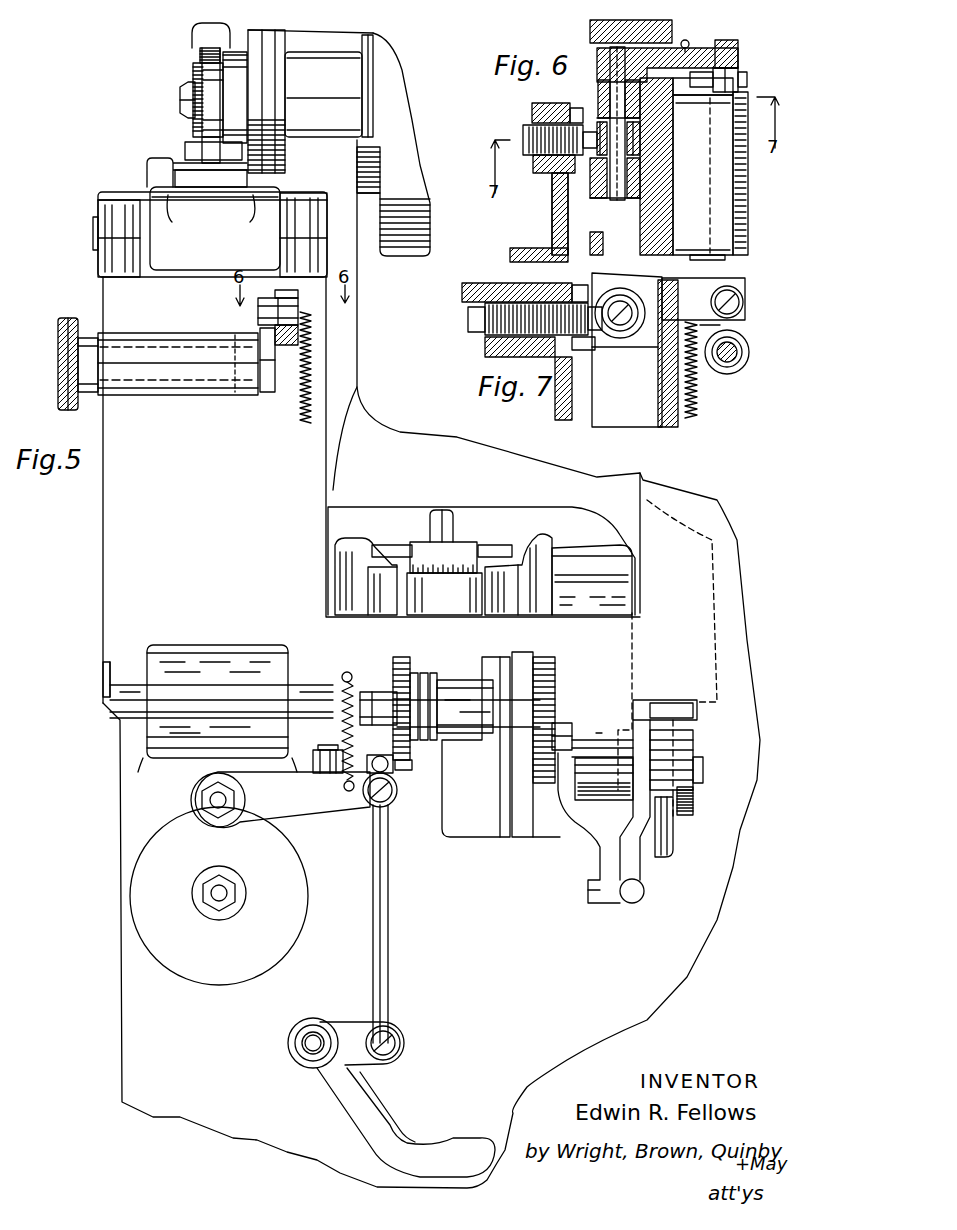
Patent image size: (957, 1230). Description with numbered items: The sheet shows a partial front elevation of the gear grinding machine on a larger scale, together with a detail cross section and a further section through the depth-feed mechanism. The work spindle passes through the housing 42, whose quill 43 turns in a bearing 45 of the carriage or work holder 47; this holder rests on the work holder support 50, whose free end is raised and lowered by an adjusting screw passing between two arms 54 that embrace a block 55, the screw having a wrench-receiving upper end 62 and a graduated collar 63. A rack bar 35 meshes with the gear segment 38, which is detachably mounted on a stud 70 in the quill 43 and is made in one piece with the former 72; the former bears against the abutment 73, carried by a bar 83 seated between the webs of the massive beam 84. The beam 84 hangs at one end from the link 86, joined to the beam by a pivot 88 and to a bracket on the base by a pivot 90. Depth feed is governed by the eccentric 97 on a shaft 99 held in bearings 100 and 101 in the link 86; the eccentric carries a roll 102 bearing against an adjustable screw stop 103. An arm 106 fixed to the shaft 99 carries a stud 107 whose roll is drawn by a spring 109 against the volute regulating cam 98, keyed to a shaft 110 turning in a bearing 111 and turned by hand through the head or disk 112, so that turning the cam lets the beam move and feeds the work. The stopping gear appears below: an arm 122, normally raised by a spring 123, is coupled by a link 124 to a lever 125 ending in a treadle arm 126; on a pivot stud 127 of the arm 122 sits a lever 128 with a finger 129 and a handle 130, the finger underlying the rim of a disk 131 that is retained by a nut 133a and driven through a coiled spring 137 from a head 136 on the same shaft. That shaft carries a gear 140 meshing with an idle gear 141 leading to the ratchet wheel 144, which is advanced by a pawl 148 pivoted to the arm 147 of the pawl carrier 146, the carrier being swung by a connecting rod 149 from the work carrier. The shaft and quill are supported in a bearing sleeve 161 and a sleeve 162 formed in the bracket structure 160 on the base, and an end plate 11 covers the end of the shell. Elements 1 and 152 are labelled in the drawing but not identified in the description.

In FIG. 5, the machine frame 1 is at (122, 982).
In FIG. 5, the end plate 11 is at (230, 980).
In FIG. 5, the rack bar 35 is at (192, 36).
In FIG. 5, the gear segment 38 is at (200, 55).
In FIG. 5, the housing 42 is at (400, 258).
In FIG. 5, the sleeve or quill 43 is at (240, 35).
In FIG. 5, the bearing 45 is at (330, 40).
In FIG. 5, the carriage or work holder 47 is at (347, 360).
In FIG. 5, the work holder support 50 is at (387, 550).
In FIG. 5, the arms 54 is at (560, 575).
In FIG. 5, the block 55 is at (505, 575).
In FIG. 5, the upper end of screw 62 is at (448, 525).
In FIG. 5, the collar 63 is at (460, 560).
In FIG. 5, the stud 70 is at (180, 100).
In FIG. 5, the former 72 is at (200, 152).
In FIG. 5, the abutment 73 is at (172, 200).
In FIG. 5, the bar 83 is at (223, 200).
In FIG. 5, the channel bar or beam 84 is at (160, 186).
In FIG. 5, the link 86 is at (118, 530).
In FIG. 6, the link 86 is at (665, 185).
In FIG. 7, the link 86 is at (660, 420).
In FIG. 5, the pivot 88 is at (95, 228).
In FIG. 5, the pivot 90 is at (100, 690).
In FIG. 7, the cam or eccentric 97 is at (620, 333).
In FIG. 5, the regulating cam 98 is at (272, 370).
In FIG. 7, the regulating cam 98 is at (728, 328).
In FIG. 6, the shaft 99 is at (614, 92).
In FIG. 6, the bearing 100 is at (598, 100).
In FIG. 6, the bearing 101 is at (595, 202).
In FIG. 6, the roll 102 is at (630, 135).
In FIG. 7, the roll 102 is at (615, 350).
In FIG. 6, the screw stop 103 is at (560, 170).
In FIG. 7, the screw stop 103 is at (585, 355).
In FIG. 5, the arm 106 is at (298, 292).
In FIG. 6, the arm 106 is at (695, 48).
In FIG. 7, the arm 106 is at (690, 296).
In FIG. 5, the stud 107 is at (258, 312).
In FIG. 6, the stud 107 is at (735, 70).
In FIG. 7, the stud 107 is at (740, 298).
In FIG. 5, the spring 109 is at (302, 400).
In FIG. 6, the spring 109 is at (684, 40).
In FIG. 7, the spring 109 is at (698, 400).
In FIG. 5, the shaft 110 is at (236, 398).
In FIG. 6, the shaft 110 is at (730, 210).
In FIG. 7, the shaft 110 is at (745, 360).
In FIG. 5, the bearing 111 is at (185, 370).
In FIG. 6, the bearing 111 is at (745, 178).
In FIG. 5, the head or disk 112 is at (62, 328).
In FIG. 5, the arm 122 is at (325, 810).
In FIG. 5, the spring 123 is at (352, 690).
In FIG. 5, the link 124 is at (388, 928).
In FIG. 5, the lever 125 is at (352, 1030).
In FIG. 5, the treadle arm 126 is at (455, 1138).
In FIG. 5, the pivot stud 127 is at (325, 750).
In FIG. 5, the lever 128 is at (367, 760).
In FIG. 5, the lug or finger 129 is at (408, 770).
In FIG. 5, the handle 130 is at (392, 800).
In FIG. 5, the disk 131 is at (395, 672).
In FIG. 5, the nut 133a is at (360, 690).
In FIG. 5, the head 136 is at (427, 690).
In FIG. 5, the spring 137 is at (416, 672).
In FIG. 5, the gear 140 is at (560, 663).
In FIG. 5, the idle gear 141 is at (557, 722).
In FIG. 5, the ratchet wheel 144 is at (694, 805).
In FIG. 5, the pawl carrier 146 is at (600, 855).
In FIG. 5, the arm 147 is at (645, 703).
In FIG. 5, the pawl 148 is at (680, 705).
In FIG. 5, the connecting rod 149 is at (648, 870).
In FIG. 5, the cylinder 152 is at (695, 750).
In FIG. 5, the bracket structure 160 is at (500, 783).
In FIG. 5, the bearing sleeve 161 is at (455, 690).
In FIG. 5, the sleeve 162 is at (596, 740).